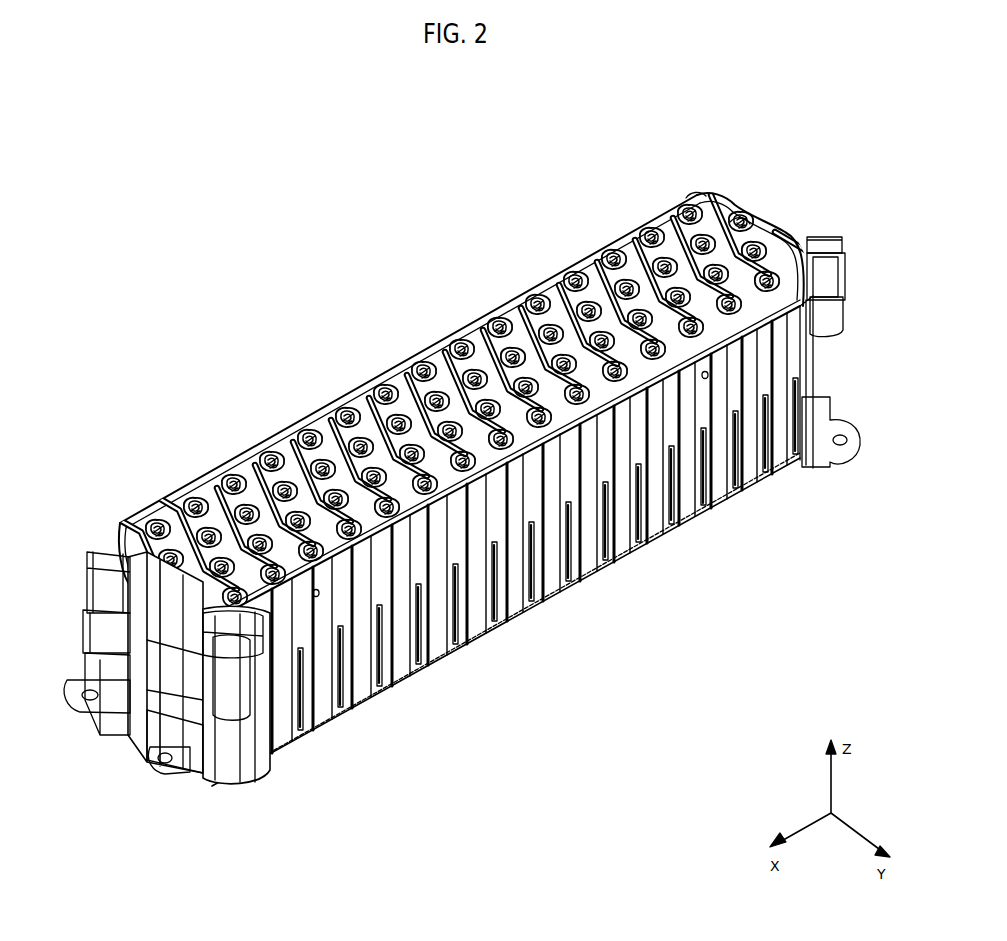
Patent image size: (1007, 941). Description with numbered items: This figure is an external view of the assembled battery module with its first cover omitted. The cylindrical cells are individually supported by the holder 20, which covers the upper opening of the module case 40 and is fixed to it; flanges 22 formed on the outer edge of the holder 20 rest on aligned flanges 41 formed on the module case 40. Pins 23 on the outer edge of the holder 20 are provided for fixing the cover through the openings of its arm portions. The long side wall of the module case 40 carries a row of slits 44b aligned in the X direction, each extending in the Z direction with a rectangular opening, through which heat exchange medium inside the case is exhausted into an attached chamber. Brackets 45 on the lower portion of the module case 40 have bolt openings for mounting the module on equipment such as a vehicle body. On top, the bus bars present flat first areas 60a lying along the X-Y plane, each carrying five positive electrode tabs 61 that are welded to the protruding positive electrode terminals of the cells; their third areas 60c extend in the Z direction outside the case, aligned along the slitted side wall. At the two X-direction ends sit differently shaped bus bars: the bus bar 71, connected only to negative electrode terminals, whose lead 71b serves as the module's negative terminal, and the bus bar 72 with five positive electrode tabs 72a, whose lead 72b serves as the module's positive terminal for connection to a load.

The holder 20 is at (165, 600).
The flange 22 is at (100, 622).
The pin 23 is at (705, 376).
The module case 40 is at (160, 684).
The flange 41 is at (125, 655).
The slit 44b is at (250, 784).
The bracket 45 is at (75, 707).
The first area 60a is at (143, 518).
The third area 60c is at (284, 745).
The positive electrode tab 61 is at (153, 518).
The bus bar 71 is at (247, 794).
The lead 71b is at (132, 737).
The bus bar 72 is at (745, 248).
The positive electrode tab 72a is at (731, 239).
The lead 72b is at (843, 247).